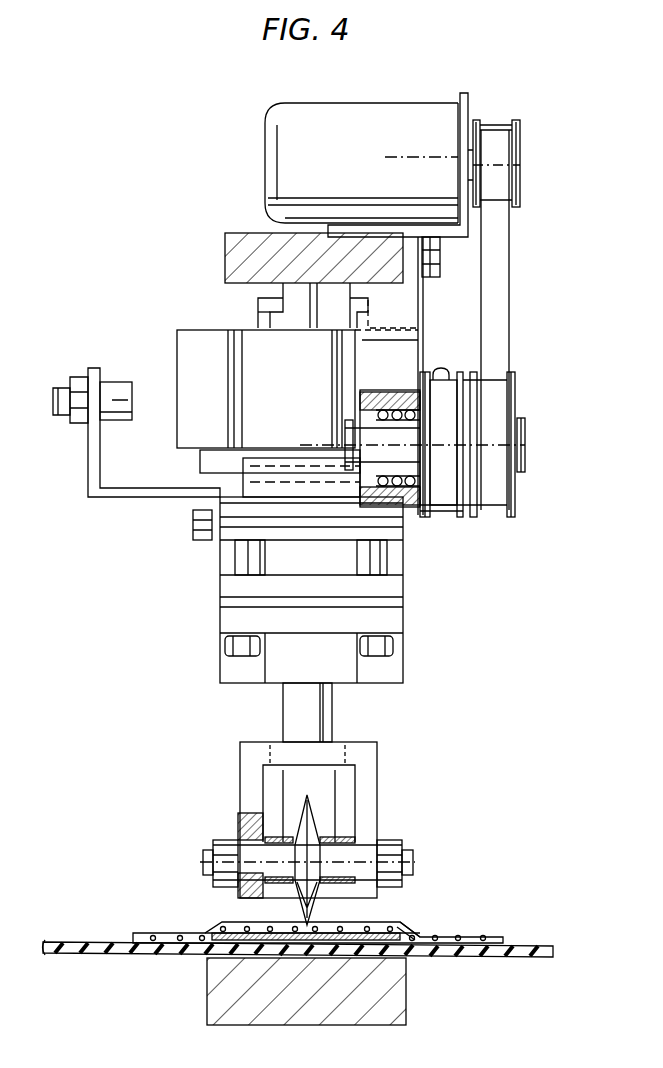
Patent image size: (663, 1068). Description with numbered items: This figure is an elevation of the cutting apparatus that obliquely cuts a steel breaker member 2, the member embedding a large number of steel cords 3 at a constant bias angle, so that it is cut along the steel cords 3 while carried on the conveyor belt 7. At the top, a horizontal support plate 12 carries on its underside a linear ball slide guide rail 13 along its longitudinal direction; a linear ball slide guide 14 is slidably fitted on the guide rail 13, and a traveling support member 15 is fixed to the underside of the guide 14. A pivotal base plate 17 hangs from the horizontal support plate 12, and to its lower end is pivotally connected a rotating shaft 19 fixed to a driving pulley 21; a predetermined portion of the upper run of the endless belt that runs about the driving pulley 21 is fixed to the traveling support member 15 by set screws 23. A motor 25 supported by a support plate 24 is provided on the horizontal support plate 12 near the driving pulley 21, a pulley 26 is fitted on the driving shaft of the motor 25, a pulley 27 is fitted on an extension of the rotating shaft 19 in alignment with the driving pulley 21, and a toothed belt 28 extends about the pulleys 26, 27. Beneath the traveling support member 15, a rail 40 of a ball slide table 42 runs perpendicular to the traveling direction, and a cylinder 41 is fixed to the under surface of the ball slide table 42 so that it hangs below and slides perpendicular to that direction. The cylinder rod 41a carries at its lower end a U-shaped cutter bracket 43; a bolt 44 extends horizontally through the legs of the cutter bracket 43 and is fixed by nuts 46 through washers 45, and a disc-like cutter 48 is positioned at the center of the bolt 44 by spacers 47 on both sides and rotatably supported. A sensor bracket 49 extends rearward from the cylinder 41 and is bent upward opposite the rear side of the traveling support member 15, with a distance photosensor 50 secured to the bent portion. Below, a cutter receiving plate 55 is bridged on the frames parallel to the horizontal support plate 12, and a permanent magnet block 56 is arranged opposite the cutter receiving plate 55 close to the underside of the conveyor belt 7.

The steel breaker member 2 is at (205, 933).
The steel cords 3 is at (435, 936).
The conveyor belt 7 is at (520, 943).
The horizontal support plate 12 is at (233, 233).
The linear ball slide guide rail 13 is at (270, 292).
The linear ball slide guide 14 is at (258, 318).
The traveling support member 15 is at (178, 330).
The pivotal base plate 17 is at (423, 300).
The rotating shaft 19 is at (525, 445).
The driving pulley 21 is at (460, 518).
The set screws 23 is at (441, 367).
The support plate 24 is at (470, 95).
The motor 25 is at (385, 103).
The pulley 26 is at (520, 140).
The pulley 27 is at (511, 518).
The toothed belt 28 is at (509, 322).
The rail 40 is at (200, 462).
The cylinder 41 is at (220, 612).
The cylinder rod 41a is at (283, 718).
The ball slide table 42 is at (243, 486).
The U-shaped cutter bracket 43 is at (377, 758).
The bolt 44 is at (413, 862).
The washers 45 is at (377, 830).
The nuts 46 is at (402, 850).
The spacers 47 is at (332, 820).
The disc-like cutter 48 is at (330, 905).
The sensor bracket 49 is at (95, 500).
The distance photosensor 50 is at (118, 382).
The cutter receiving plate 55 is at (398, 917).
The permanent magnet block 56 is at (406, 985).